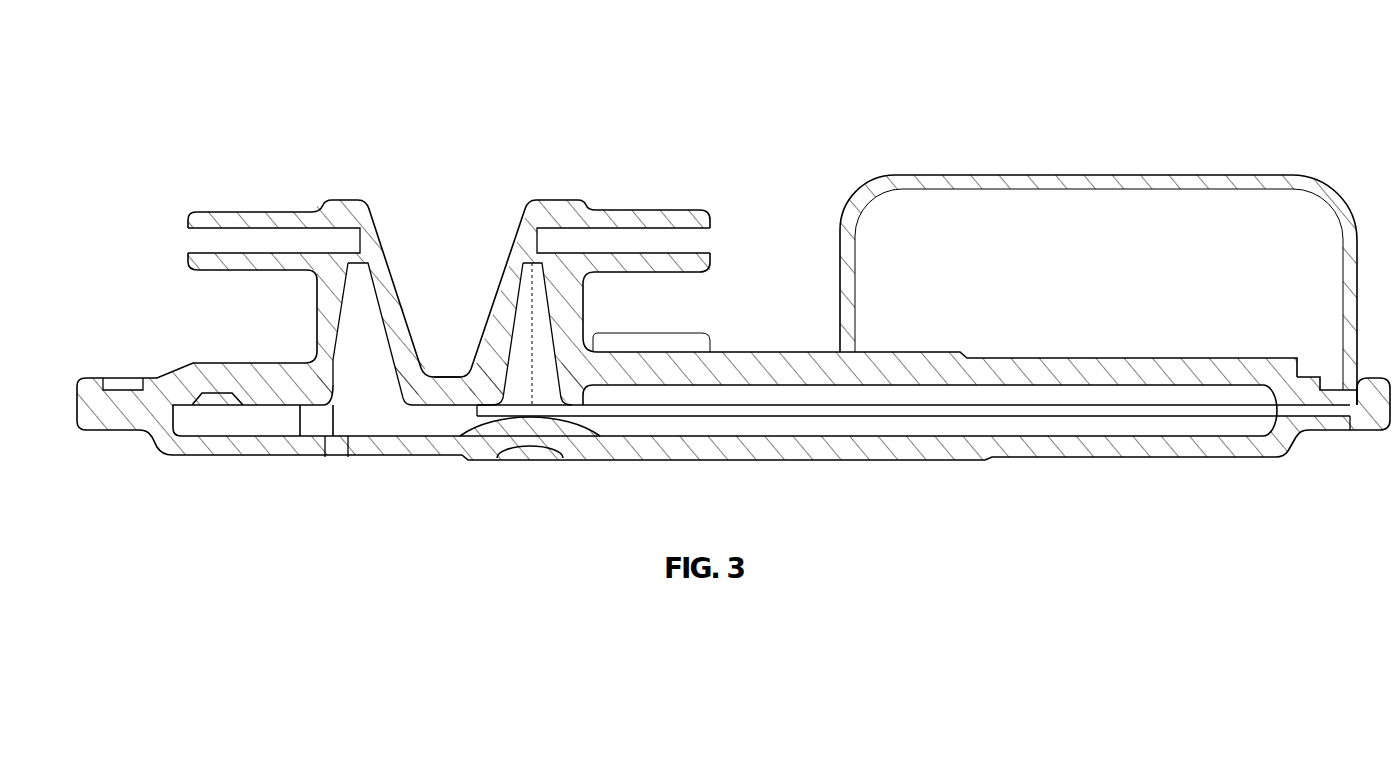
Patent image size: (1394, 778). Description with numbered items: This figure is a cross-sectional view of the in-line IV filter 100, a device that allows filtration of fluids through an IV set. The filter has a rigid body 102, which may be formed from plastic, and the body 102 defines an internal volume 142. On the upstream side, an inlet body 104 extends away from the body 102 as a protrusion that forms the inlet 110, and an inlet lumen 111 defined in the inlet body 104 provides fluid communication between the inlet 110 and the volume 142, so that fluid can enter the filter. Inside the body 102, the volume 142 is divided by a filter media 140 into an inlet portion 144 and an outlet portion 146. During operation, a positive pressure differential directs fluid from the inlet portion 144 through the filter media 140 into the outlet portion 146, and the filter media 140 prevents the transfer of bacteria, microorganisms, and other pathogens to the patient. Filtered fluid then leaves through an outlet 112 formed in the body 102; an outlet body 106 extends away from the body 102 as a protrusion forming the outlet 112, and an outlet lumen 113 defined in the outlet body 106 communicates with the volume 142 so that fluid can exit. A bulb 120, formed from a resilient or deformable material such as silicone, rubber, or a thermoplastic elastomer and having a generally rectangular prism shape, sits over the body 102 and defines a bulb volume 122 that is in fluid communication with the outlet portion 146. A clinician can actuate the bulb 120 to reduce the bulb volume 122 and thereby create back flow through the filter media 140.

The in-line IV filter 100 is at (1090, 66).
The body 102 is at (207, 428).
The inlet body 104 is at (337, 213).
The outlet body 106 is at (543, 202).
The inlet 110 is at (223, 237).
The inlet lumen 111 is at (271, 223).
The outlet 112 is at (690, 221).
The outlet lumen 113 is at (655, 237).
The bulb 120 is at (1318, 180).
The bulb volume 122 is at (1100, 222).
The filter media 140 is at (930, 417).
The volume 142 is at (435, 428).
The inlet portion 144 is at (768, 428).
The outlet portion 146 is at (742, 396).